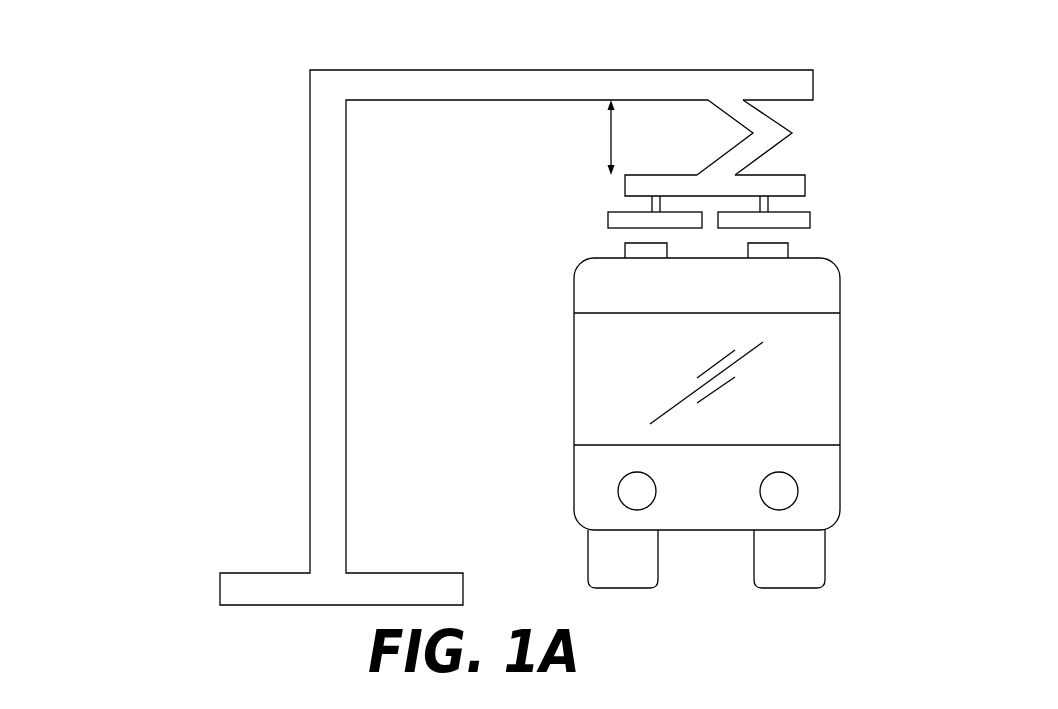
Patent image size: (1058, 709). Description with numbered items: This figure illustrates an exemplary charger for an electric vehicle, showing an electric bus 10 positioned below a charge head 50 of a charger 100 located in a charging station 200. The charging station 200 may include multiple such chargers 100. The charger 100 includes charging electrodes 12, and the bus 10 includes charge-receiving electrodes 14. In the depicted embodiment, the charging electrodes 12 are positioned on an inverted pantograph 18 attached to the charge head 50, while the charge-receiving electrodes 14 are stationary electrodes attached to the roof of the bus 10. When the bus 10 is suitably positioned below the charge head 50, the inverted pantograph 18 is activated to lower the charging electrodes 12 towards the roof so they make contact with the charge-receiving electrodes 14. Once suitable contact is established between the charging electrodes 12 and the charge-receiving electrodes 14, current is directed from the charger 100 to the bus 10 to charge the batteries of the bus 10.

The electric bus 10 is at (869, 327).
The charging electrodes 12 is at (857, 192).
The charge-receiving electrodes 14 is at (839, 245).
The inverted pantograph 18 is at (817, 132).
The charge head 50 is at (765, 89).
The charger 100 is at (263, 321).
The charging station 200 is at (502, 304).